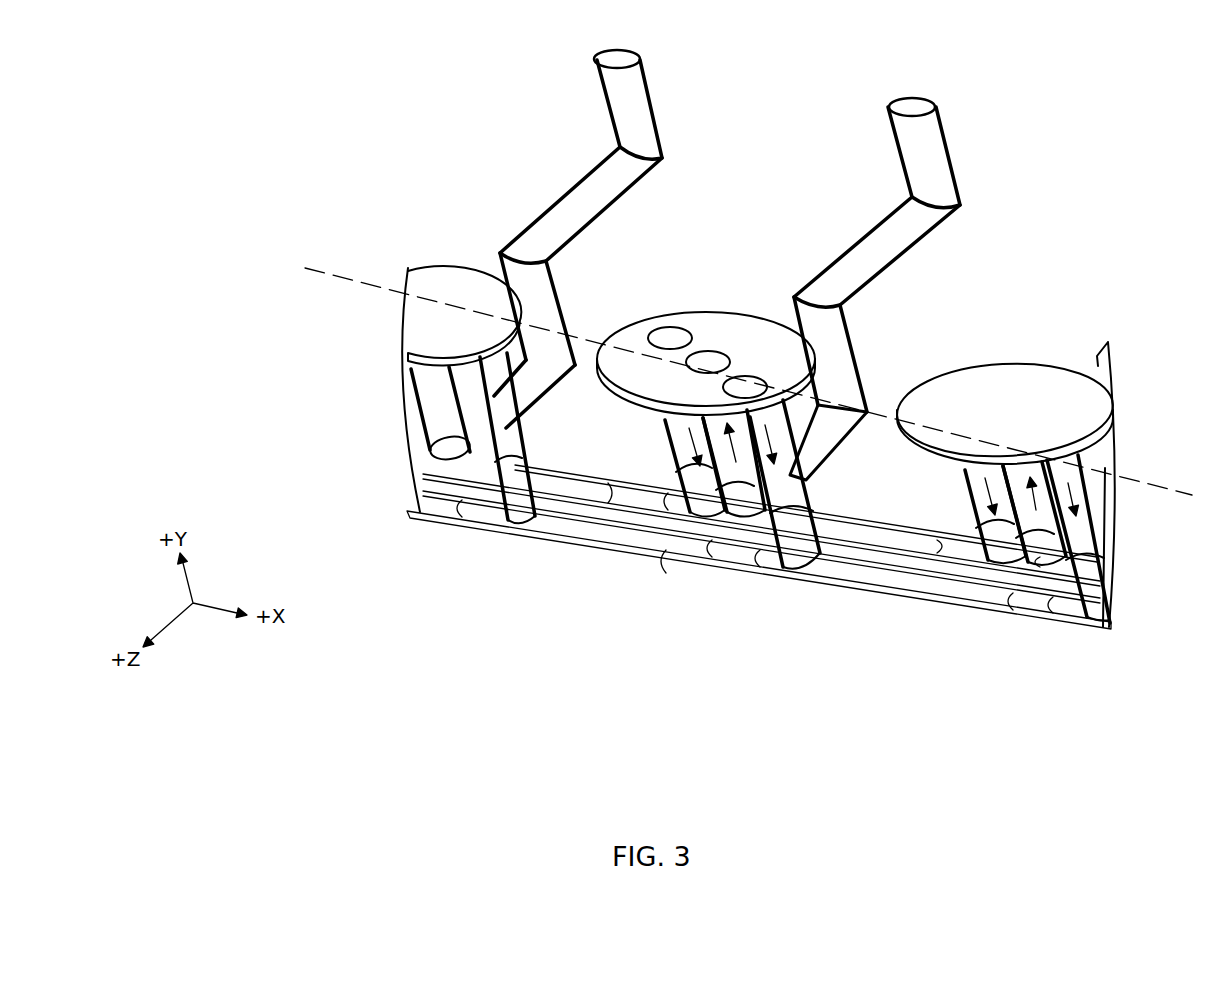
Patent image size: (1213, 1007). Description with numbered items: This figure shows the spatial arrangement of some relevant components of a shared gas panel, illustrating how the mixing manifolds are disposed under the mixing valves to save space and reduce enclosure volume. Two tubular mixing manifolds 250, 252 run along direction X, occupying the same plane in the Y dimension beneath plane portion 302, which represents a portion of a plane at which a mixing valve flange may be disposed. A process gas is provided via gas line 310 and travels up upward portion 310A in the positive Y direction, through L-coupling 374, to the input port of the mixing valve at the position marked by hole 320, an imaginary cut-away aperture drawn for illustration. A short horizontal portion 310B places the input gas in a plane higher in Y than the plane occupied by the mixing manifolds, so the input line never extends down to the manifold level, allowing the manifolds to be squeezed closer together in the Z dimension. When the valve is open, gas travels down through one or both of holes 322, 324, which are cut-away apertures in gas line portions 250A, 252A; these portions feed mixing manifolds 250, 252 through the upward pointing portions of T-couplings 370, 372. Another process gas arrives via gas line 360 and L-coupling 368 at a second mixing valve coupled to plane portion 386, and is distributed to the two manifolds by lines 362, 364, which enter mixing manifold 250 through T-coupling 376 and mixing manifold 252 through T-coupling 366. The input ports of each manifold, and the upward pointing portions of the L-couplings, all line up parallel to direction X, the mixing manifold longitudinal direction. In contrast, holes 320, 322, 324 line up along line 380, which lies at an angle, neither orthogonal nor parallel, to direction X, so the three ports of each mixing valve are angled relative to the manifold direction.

The mixing manifold 250 is at (883, 522).
The gas line portion 250A is at (668, 425).
The mixing manifold 252 is at (963, 593).
The gas line portion 252A is at (787, 500).
The plane portion 302 is at (706, 338).
The gas line 310 is at (902, 289).
The upward portion of gas line 310A is at (730, 477).
The short horizontal portion 310B is at (855, 420).
The hole 320 is at (722, 355).
The hole 322 is at (678, 327).
The hole 324 is at (757, 375).
The gas line 360 is at (1047, 513).
The line 362 is at (987, 532).
The line 364 is at (1093, 587).
The T-coupling 366 is at (1106, 559).
The L-coupling 368 is at (1043, 550).
The T-coupling 370 is at (656, 510).
The T-coupling 372 is at (807, 505).
The L-coupling 374 is at (740, 530).
The T-coupling 376 is at (963, 557).
The line 380 is at (590, 300).
The plane portion 386 is at (1003, 378).